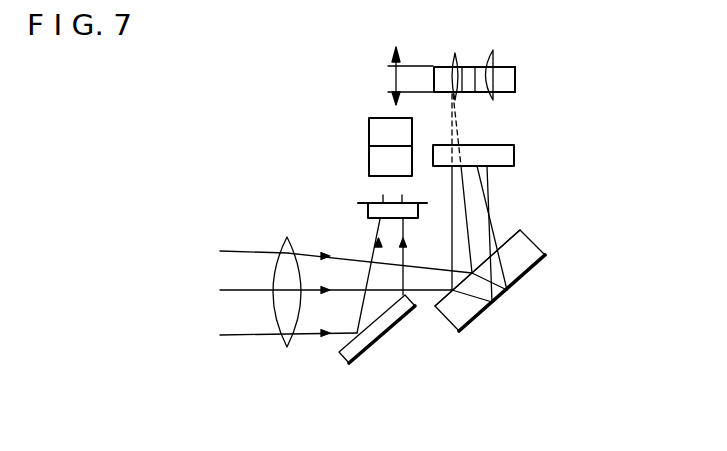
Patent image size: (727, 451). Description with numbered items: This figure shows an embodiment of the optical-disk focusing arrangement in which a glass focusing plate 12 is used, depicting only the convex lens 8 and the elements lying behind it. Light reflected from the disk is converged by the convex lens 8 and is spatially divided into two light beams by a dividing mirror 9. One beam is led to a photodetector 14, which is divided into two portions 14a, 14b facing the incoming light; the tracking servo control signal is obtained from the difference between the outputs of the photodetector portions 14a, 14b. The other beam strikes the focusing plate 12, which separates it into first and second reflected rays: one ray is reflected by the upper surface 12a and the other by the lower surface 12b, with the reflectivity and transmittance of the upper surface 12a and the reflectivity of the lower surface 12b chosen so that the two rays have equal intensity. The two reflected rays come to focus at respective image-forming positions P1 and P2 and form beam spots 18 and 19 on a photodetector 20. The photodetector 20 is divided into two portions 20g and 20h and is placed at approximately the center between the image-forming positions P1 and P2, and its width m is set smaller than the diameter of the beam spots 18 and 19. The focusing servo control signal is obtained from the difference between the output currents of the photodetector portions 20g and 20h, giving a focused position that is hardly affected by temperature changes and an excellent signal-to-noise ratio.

The convex lens 8 is at (287, 236).
The dividing mirror 9 is at (356, 361).
The focusing plate 12 is at (533, 243).
The upper surface of focusing plate 12a is at (436, 299).
The lower surface of focusing plate 12b is at (481, 312).
The photodetector 14 is at (361, 203).
The photodetector portion 14a is at (370, 122).
The photodetector portion 14b is at (370, 159).
The beam spot 18 is at (460, 66).
The beam spot 19 is at (494, 52).
The photodetector 20 is at (514, 157).
The photodetector portion 20g is at (441, 67).
The photodetector portion 20h is at (515, 80).
The width of photodetector m is at (399, 76).
The image-forming position of first reflected ray P1 is at (441, 129).
The image-forming position of second reflected ray P2 is at (491, 216).